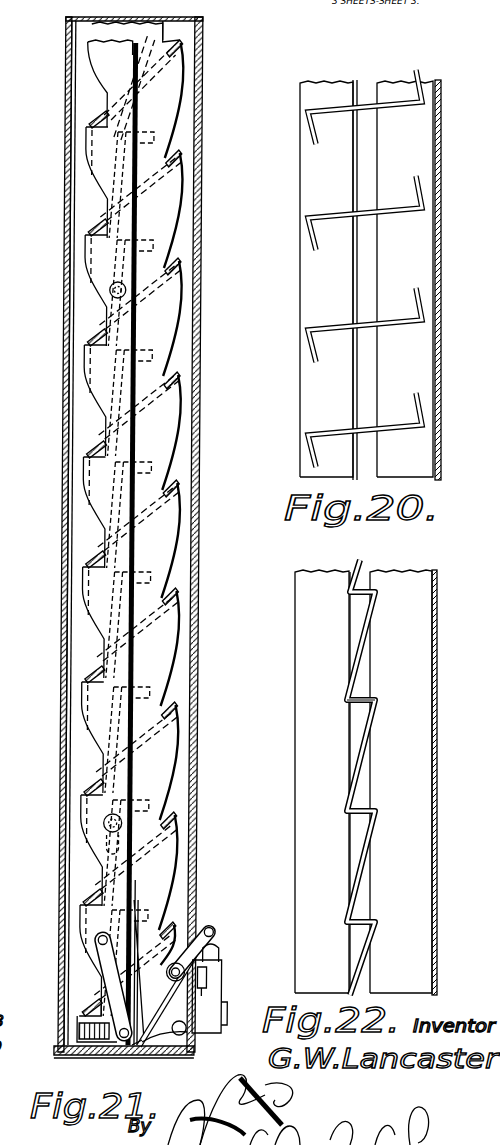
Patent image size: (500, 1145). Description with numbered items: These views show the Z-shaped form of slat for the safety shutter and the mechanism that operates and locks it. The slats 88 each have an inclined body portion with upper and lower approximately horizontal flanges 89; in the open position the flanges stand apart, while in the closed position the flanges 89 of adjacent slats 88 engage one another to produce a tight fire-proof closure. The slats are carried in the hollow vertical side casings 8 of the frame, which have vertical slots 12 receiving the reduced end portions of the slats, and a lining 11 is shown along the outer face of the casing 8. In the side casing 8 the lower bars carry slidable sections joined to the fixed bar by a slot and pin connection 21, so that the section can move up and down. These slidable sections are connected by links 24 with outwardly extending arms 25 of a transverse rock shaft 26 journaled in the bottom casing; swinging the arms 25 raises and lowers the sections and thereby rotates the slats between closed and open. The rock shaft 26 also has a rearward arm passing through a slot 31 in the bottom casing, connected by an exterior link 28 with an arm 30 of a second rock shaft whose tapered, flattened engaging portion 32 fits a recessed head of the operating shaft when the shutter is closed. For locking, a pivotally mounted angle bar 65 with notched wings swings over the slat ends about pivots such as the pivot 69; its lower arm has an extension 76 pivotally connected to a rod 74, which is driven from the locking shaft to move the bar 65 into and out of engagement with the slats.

In FIG. 21, the vertical side casing 8 is at (68, 680).
In FIG. 20, the vertical side casing 8 is at (425, 370).
In FIG. 22, the vertical side casing 8 is at (372, 781).
In FIG. 20, the lining strip 11 is at (440, 286).
In FIG. 22, the lining strip 11 is at (436, 768).
In FIG. 22, the vertical slot 12 is at (356, 620).
In FIG. 21, the slot and pin connection 21 is at (112, 291).
In FIG. 21, the link 24 is at (104, 970).
In FIG. 21, the outwardly extending arm 25 is at (173, 989).
In FIG. 21, the transverse rock shaft 26 is at (176, 968).
In FIG. 21, the exterior link 28 is at (226, 950).
In FIG. 21, the exteriorly arranged arm 30 is at (218, 996).
In FIG. 21, the slot 31 is at (204, 926).
In FIG. 21, the engaging portion 32 is at (233, 1020).
In FIG. 21, the angle bar 65 is at (72, 933).
In FIG. 21, the pivot 69 is at (94, 1052).
In FIG. 21, the rod 74 is at (127, 1065).
In FIG. 21, the extension 76 is at (159, 1051).
In FIG. 22, the slat 88 is at (372, 630).
In FIG. 22, the horizontal flange 89 is at (371, 692).